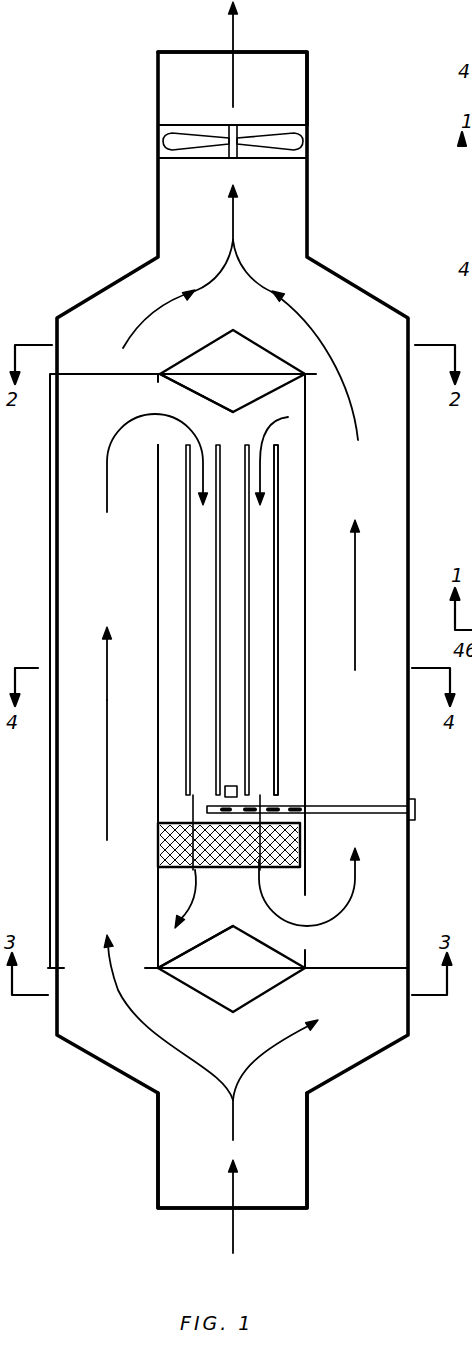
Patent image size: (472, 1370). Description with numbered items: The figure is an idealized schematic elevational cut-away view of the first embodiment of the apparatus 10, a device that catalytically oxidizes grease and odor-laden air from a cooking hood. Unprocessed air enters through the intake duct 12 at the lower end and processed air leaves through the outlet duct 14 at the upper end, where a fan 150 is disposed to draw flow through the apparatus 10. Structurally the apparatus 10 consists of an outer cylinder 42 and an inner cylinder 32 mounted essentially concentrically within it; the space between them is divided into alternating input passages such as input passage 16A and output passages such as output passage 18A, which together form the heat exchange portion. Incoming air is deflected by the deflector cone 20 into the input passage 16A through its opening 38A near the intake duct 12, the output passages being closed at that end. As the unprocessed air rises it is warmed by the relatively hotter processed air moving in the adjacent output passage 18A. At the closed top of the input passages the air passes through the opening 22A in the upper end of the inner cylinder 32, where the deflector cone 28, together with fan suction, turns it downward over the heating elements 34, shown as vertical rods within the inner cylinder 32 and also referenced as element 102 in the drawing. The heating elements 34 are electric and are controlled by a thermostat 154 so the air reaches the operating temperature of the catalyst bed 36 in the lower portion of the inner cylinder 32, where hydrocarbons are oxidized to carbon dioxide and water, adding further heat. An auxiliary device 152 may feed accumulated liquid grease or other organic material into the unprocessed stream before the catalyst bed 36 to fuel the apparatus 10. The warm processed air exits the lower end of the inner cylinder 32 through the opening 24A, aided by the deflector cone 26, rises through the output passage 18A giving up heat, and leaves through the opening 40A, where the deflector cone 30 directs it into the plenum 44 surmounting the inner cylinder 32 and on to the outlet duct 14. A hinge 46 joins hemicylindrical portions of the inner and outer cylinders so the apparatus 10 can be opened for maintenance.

The apparatus 10 is at (418, 495).
The intake duct 12 is at (285, 1210).
The outlet duct 14 is at (277, 50).
The input passage 16A is at (127, 577).
The output passage 18A is at (377, 782).
The deflector cone 20 is at (212, 1000).
The opening 22A is at (157, 403).
The opening 24A is at (305, 932).
The deflector cone 26 is at (213, 937).
The deflector cone 28 is at (195, 397).
The deflector cone 30 is at (198, 350).
The inner cylinder 32 is at (158, 478).
The heating elements 34 is at (277, 523).
The catalyst bed 36 is at (175, 843).
The opening 38A is at (92, 967).
The opening 40A is at (375, 375).
The outer cylinder 42 is at (55, 770).
The plenum 44 is at (251, 311).
The hinge 46 is at (57, 523).
The heat exchange element 102 is at (364, 727).
The fan 150 is at (163, 143).
The auxiliary device 152 is at (373, 815).
The thermostat 154 is at (225, 790).